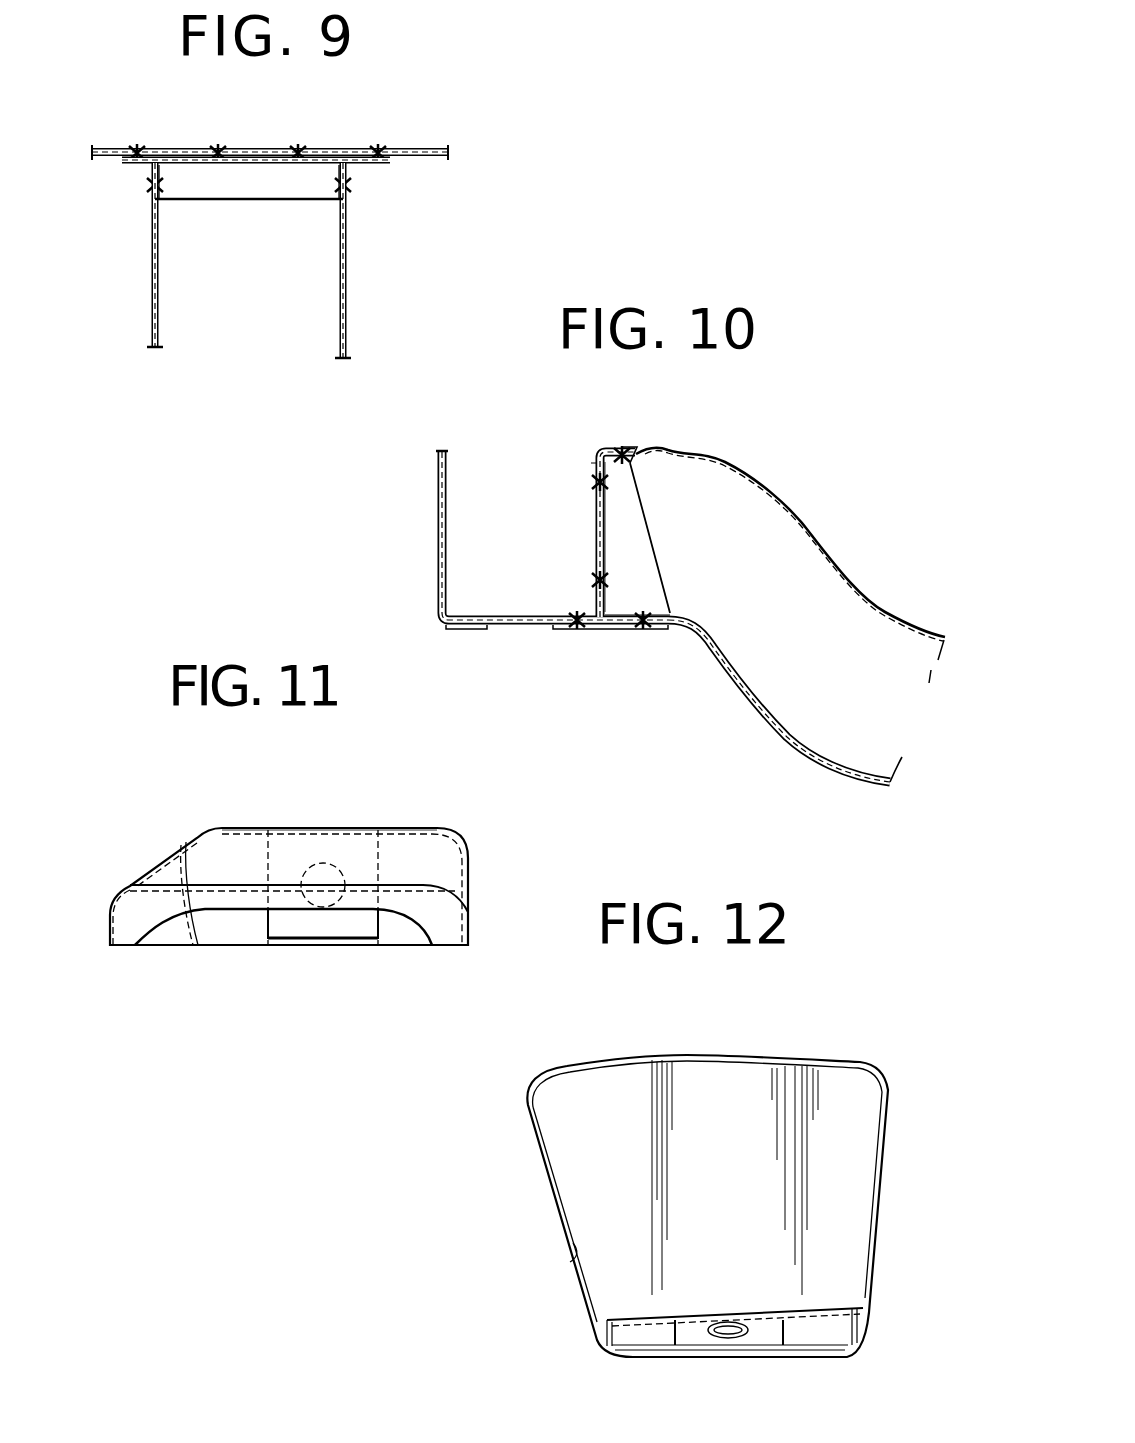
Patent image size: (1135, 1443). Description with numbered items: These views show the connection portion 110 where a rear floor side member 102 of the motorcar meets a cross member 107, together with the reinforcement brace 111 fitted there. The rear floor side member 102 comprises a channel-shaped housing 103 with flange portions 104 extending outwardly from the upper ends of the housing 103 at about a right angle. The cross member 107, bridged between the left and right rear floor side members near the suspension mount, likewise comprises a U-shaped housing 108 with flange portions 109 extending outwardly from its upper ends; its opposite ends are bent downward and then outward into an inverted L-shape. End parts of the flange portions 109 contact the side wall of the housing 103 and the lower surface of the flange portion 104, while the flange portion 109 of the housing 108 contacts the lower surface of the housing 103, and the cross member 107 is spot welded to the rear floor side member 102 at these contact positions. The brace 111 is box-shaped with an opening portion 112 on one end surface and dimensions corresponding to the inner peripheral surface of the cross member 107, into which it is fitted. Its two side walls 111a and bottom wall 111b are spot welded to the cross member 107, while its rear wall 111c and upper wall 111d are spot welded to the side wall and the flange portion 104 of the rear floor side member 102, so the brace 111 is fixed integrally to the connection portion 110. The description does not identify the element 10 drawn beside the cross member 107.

In FIG. 10, the seat cushion / seat body 10 is at (908, 502).
In FIG. 9, the rear floor side member 102 is at (415, 148).
In FIG. 10, the rear floor side member 102 is at (532, 627).
In FIG. 9, the housing 103 is at (323, 148).
In FIG. 10, the housing 103 is at (595, 534).
In FIG. 10, the flange portions 104 is at (623, 455).
In FIG. 9, the cross member 107 is at (350, 297).
In FIG. 9, the housing 108 is at (160, 318).
In FIG. 10, the housing 108 is at (743, 680).
In FIG. 9, the flange portions 109 is at (135, 166).
In FIG. 9, the connection portion 110 is at (178, 145).
In FIG. 10, the connection portion 110 is at (590, 462).
In FIG. 9, the reinforcement brace 111 is at (277, 227).
In FIG. 10, the reinforcement brace 111 is at (682, 536).
In FIG. 11, the reinforcement brace 111 is at (301, 876).
In FIG. 12, the reinforcement brace 111 is at (697, 1189).
In FIG. 9, the side walls 111a is at (173, 195).
In FIG. 11, the side walls 111a is at (107, 917).
In FIG. 12, the side walls 111a is at (550, 1182).
In FIG. 10, the bottom wall 111b is at (670, 610).
In FIG. 11, the bottom wall 111b is at (253, 945).
In FIG. 12, the bottom wall 111b is at (660, 1358).
In FIG. 9, the rear wall 111c is at (238, 148).
In FIG. 10, the rear wall 111c is at (650, 538).
In FIG. 11, the rear wall 111c is at (325, 825).
In FIG. 12, the rear wall 111c is at (620, 1085).
In FIG. 9, the upper wall 111d is at (323, 195).
In FIG. 10, the upper wall 111d is at (631, 466).
In FIG. 11, the upper wall 111d is at (227, 915).
In FIG. 12, the upper wall 111d is at (725, 1050).
In FIG. 9, the opening portion 112 is at (255, 210).
In FIG. 10, the opening portion 112 is at (644, 517).
In FIG. 11, the opening portion 112 is at (400, 927).
In FIG. 12, the opening portion 112 is at (573, 1260).